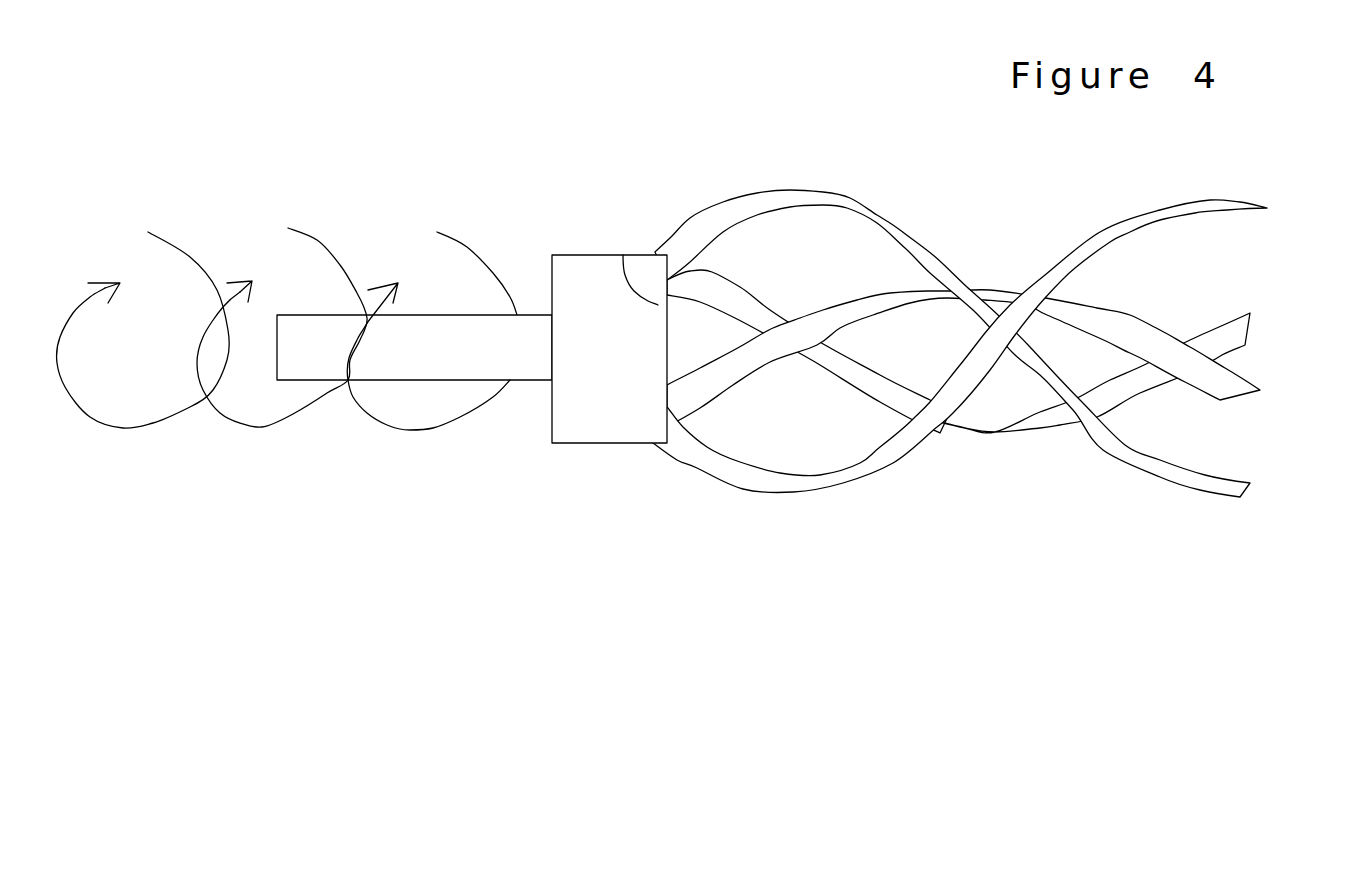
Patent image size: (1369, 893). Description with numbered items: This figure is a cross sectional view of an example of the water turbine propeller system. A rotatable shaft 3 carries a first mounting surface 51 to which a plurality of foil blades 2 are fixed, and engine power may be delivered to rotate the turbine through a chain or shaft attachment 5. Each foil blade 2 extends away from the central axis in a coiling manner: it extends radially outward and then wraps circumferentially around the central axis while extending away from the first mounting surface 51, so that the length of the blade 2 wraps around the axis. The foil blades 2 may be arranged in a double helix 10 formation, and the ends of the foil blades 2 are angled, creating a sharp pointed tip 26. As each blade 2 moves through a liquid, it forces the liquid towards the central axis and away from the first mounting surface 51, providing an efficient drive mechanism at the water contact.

The foil blade 2 is at (1147, 214).
The rotatable shaft 3 is at (421, 313).
The chain or shaft attachment 5 is at (600, 443).
The first mounting surface 51 is at (623, 255).
The double helix 10 is at (940, 428).
The sharp pointed tip 26 is at (1262, 390).